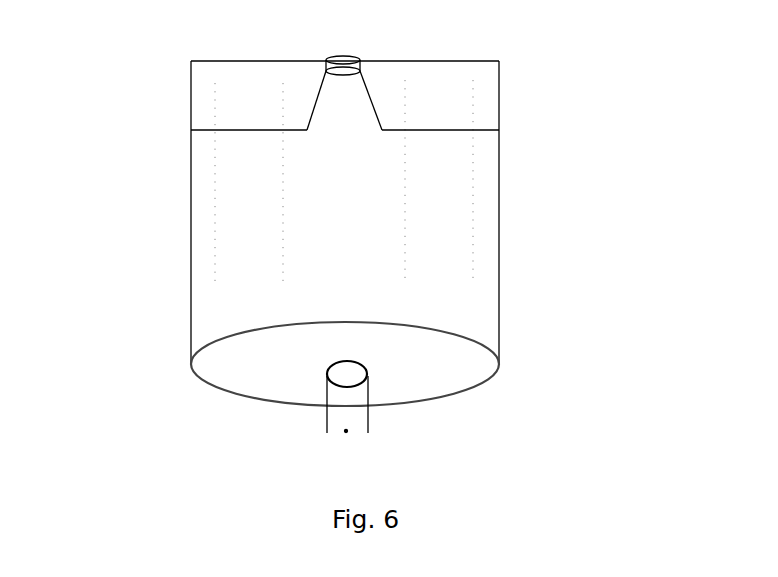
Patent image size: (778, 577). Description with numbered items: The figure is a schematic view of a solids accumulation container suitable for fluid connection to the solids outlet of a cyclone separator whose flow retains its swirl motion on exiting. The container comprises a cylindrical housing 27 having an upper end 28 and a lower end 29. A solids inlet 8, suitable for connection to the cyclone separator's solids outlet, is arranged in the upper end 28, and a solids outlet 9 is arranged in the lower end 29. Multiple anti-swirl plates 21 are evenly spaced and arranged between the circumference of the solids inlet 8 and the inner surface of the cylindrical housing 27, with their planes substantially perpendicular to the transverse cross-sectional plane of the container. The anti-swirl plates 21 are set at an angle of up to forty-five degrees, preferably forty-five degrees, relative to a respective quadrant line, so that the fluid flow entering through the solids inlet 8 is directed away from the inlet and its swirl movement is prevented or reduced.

The solids inlet 8 is at (355, 63).
The solids outlet 9 is at (353, 378).
The anti-swirl plates 21 is at (422, 107).
The cylindrical housing 27 is at (191, 248).
The upper end 28 is at (192, 72).
The lower end 29 is at (190, 353).